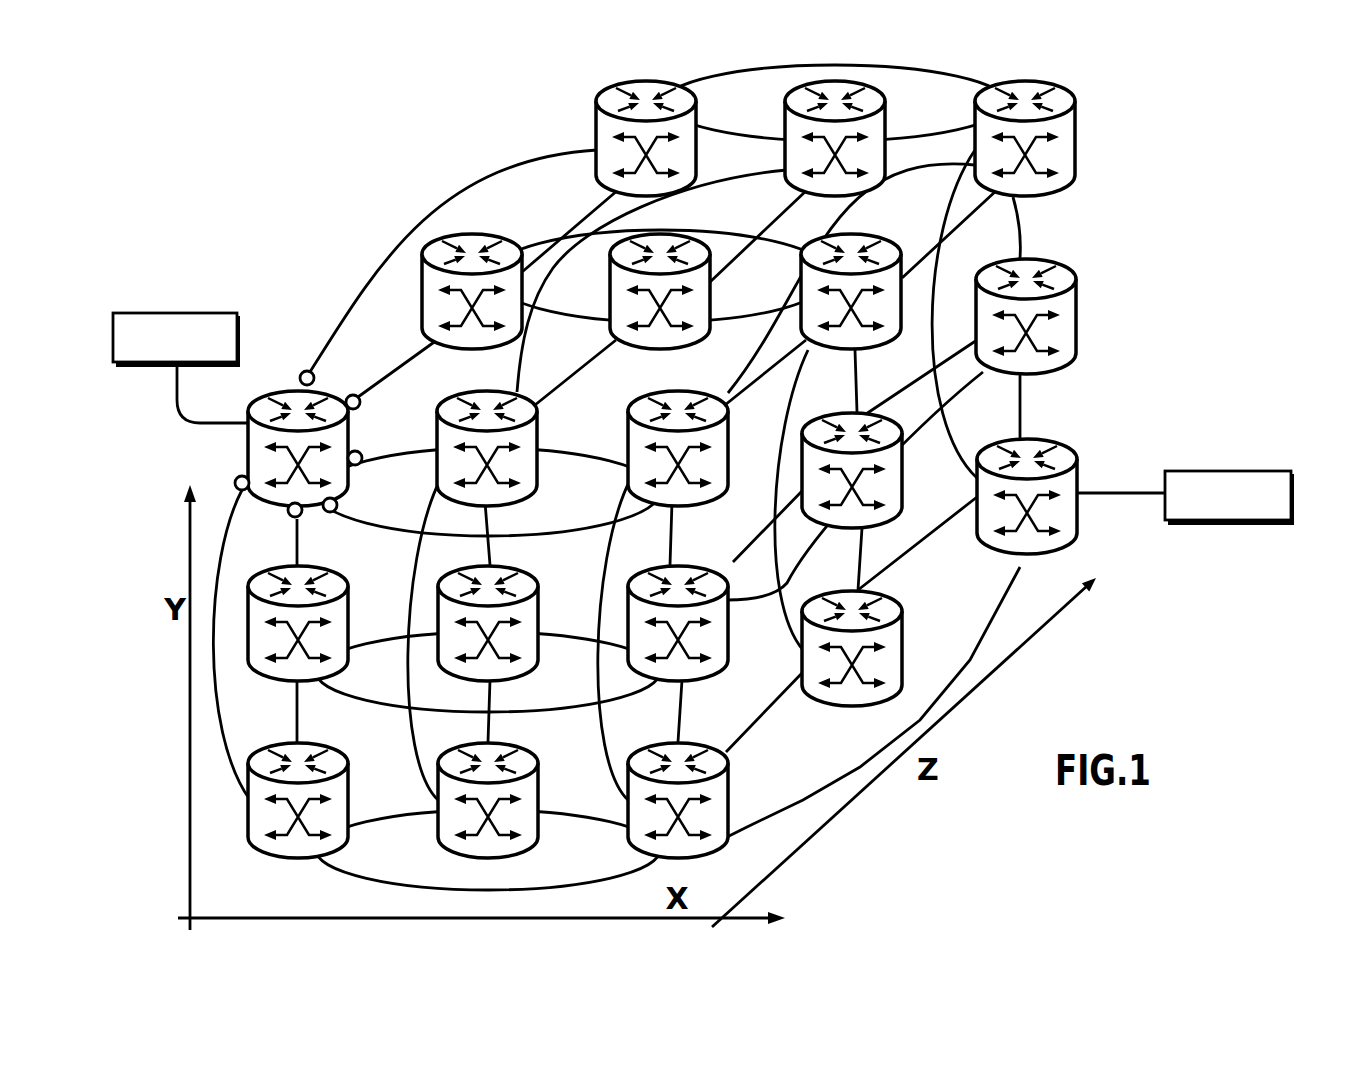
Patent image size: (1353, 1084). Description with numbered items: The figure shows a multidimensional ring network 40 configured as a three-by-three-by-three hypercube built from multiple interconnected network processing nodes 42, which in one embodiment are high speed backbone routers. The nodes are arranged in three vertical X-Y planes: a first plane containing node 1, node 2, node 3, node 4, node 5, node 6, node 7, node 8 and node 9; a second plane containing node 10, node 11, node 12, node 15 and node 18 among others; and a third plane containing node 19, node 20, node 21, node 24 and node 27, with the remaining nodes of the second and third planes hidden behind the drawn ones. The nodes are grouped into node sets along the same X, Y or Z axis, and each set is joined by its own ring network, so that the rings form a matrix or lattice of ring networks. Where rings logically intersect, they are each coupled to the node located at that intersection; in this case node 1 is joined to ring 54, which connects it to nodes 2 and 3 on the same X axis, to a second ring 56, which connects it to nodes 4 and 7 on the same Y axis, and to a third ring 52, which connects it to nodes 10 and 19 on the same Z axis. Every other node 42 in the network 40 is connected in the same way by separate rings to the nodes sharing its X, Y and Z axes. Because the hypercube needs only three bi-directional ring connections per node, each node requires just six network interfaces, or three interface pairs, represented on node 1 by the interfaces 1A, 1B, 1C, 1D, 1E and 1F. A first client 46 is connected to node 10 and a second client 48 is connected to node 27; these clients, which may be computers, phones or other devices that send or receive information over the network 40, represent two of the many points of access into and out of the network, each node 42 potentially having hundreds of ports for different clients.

The node 1 is at (348, 430).
The interface 1A is at (290, 374).
The interface 1B is at (350, 388).
The interface 1C is at (368, 474).
The interface 1D is at (327, 520).
The interface 1E is at (277, 518).
The interface 1F is at (228, 473).
The node 2 is at (538, 466).
The node 3 is at (628, 418).
The node 4 is at (268, 688).
The node 5 is at (535, 578).
The node 6 is at (713, 675).
The node 7 is at (342, 754).
The node 8 is at (532, 754).
The node 9 is at (728, 777).
The node 10 is at (422, 320).
The node 11 is at (613, 332).
The node 12 is at (876, 238).
The node 15 is at (903, 472).
The node 18 is at (903, 628).
The node 19 is at (597, 108).
The node 20 is at (885, 100).
The node 21 is at (1075, 100).
The node 24 is at (1076, 290).
The node 27 is at (1077, 462).
The multidimensional ring network 40 is at (1188, 167).
The network processing nodes 42 is at (512, 97).
The first client 46 is at (177, 313).
The second client 48 is at (1228, 471).
The third ring 52 is at (377, 270).
The ring 54 is at (366, 530).
The second ring 56 is at (220, 772).